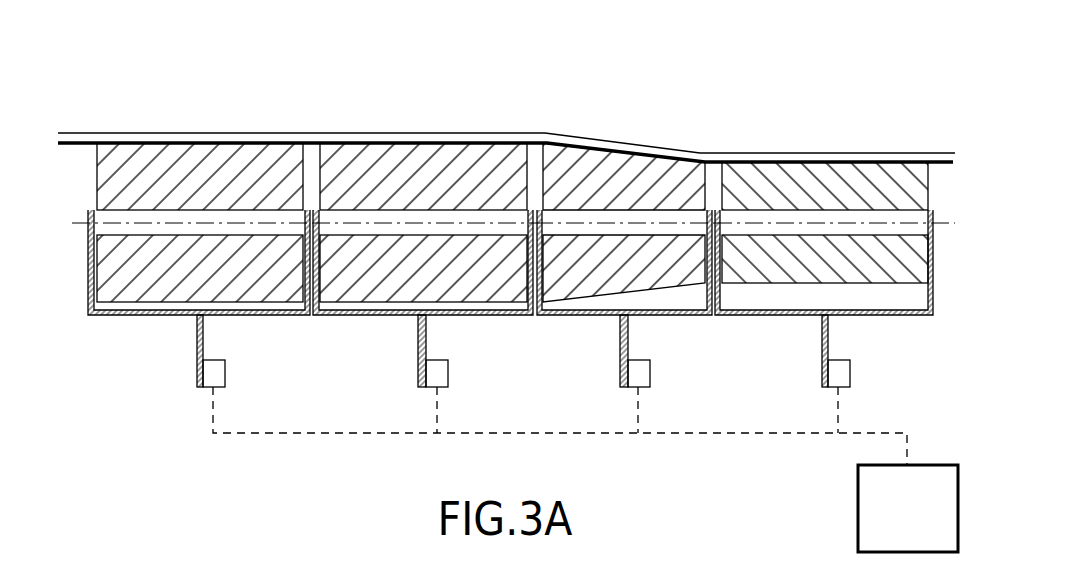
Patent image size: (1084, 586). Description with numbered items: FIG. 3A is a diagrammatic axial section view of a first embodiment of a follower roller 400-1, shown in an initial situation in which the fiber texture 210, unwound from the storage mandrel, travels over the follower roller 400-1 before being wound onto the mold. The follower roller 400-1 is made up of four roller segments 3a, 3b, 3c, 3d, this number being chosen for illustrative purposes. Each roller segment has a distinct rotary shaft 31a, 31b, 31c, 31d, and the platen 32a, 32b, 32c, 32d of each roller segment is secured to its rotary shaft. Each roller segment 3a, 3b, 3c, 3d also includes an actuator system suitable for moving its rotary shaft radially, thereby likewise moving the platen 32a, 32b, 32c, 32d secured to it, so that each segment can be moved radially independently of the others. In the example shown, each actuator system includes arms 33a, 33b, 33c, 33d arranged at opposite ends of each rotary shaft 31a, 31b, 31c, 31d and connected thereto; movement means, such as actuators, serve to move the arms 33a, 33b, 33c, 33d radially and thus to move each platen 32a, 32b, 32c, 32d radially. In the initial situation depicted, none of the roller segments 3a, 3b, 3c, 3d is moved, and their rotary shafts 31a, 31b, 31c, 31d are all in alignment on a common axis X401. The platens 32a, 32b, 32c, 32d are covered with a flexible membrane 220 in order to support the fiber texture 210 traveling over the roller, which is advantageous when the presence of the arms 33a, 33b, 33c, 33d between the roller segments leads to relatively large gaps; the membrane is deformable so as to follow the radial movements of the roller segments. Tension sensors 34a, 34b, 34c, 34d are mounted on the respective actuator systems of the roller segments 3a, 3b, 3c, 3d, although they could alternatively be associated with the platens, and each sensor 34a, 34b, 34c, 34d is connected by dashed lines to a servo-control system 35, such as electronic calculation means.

The follower roller 400-1 is at (308, 102).
The flexible membrane 220 is at (68, 140).
The fiber texture 210 is at (922, 153).
The rotary shaft 31a is at (150, 217).
The rotary shaft 31b is at (387, 217).
The rotary shaft 31c is at (580, 217).
The rotary shaft 31d is at (775, 217).
The platen 32a is at (225, 162).
The platen 32b is at (461, 162).
The platen 32c is at (654, 162).
The platen 32d is at (850, 177).
The arm 33a is at (88, 297).
The arm 33b is at (312, 315).
The arm 33c is at (534, 315).
The arm 33d is at (713, 315).
The roller segment 3a is at (150, 289).
The roller segment 3b is at (373, 289).
The roller segment 3c is at (597, 289).
The roller segment 3d is at (785, 270).
The tension sensor 34a is at (225, 375).
The tension sensor 34b is at (448, 375).
The tension sensor 34c is at (650, 375).
The tension sensor 34d is at (850, 375).
The servo-control system 35 is at (920, 521).
The common axis X401 is at (947, 223).